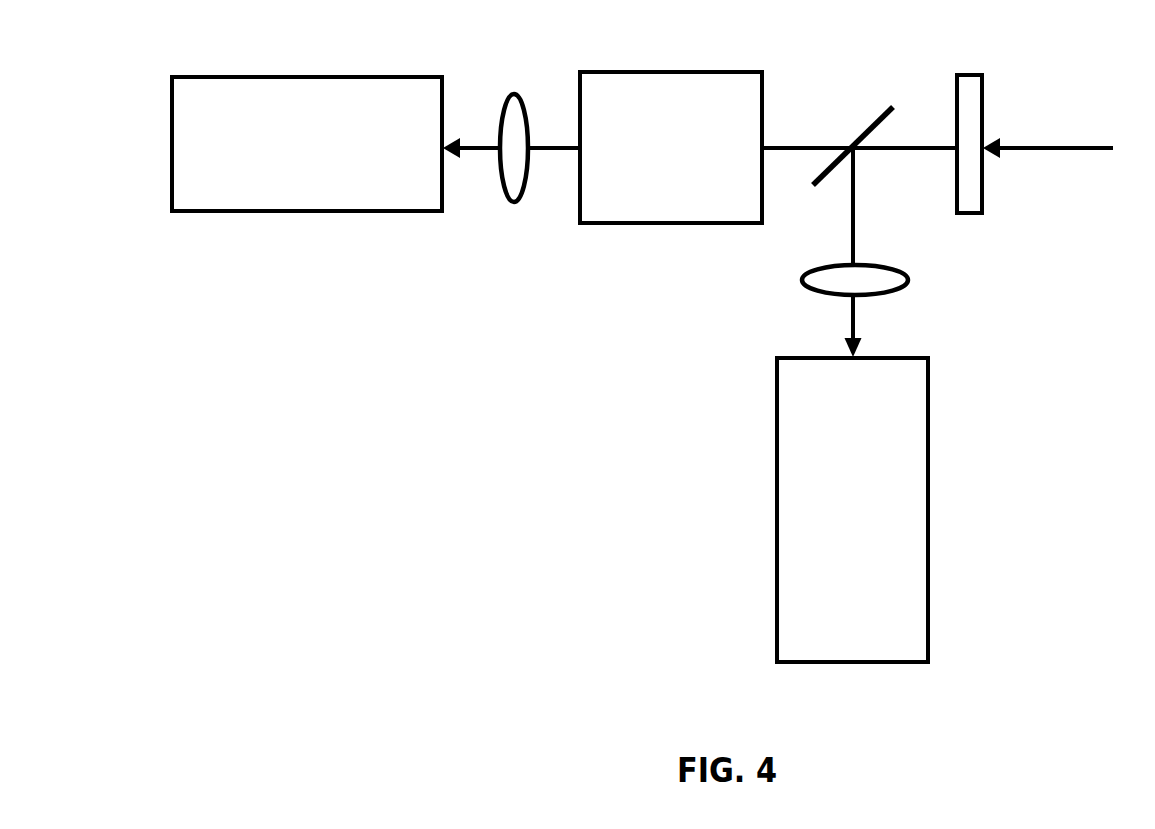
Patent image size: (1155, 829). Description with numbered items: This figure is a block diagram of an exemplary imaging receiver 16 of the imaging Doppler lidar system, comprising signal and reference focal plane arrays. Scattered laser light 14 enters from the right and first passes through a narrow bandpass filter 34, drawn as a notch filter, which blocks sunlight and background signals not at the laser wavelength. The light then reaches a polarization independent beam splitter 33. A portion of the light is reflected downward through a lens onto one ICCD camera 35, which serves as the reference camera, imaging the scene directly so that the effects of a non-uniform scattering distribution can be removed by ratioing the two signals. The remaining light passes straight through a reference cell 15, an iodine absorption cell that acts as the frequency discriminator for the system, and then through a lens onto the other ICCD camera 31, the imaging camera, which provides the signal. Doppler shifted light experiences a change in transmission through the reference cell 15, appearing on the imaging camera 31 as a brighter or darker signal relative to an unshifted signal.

The scattered laser light 14 is at (1070, 148).
The reference cell 15 is at (667, 72).
The imaging receiver 16 is at (445, 470).
The ICCD camera 31 is at (230, 75).
The polarization independent beam splitter 33 is at (818, 187).
The narrow bandpass filter 34 is at (972, 75).
The ICCD camera 35 is at (777, 500).